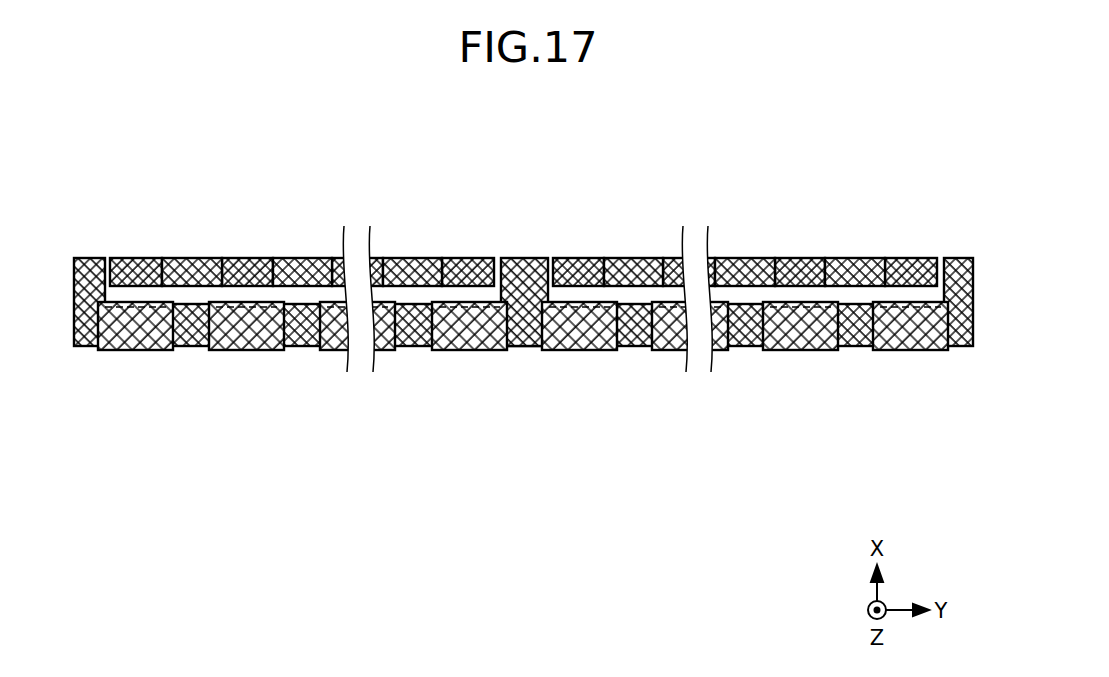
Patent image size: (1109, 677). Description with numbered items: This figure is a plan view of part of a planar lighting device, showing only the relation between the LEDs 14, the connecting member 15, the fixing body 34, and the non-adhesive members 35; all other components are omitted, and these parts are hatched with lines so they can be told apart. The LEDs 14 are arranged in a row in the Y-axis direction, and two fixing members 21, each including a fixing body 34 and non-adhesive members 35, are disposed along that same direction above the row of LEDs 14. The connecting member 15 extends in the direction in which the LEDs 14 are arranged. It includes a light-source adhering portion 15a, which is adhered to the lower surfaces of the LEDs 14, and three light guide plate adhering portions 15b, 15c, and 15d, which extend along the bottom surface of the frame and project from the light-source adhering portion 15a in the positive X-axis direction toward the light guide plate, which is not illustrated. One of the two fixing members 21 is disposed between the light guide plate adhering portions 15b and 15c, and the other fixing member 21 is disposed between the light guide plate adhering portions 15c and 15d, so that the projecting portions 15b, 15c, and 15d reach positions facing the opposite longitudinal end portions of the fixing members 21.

The LED 14 is at (133, 322).
The connecting member 15 is at (526, 388).
The light-source adhering portion 15a is at (412, 323).
The light guide plate adhering portion 15b is at (90, 275).
The light guide plate adhering portion 15c is at (525, 280).
The light guide plate adhering portion 15d is at (963, 358).
The fixing member 21 is at (526, 197).
The fixing body 34 is at (495, 158).
The non-adhesive member 35 is at (140, 258).